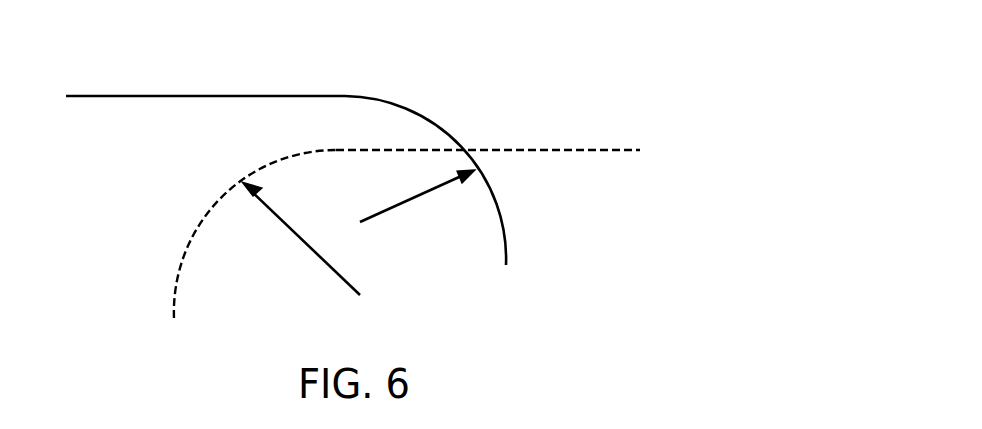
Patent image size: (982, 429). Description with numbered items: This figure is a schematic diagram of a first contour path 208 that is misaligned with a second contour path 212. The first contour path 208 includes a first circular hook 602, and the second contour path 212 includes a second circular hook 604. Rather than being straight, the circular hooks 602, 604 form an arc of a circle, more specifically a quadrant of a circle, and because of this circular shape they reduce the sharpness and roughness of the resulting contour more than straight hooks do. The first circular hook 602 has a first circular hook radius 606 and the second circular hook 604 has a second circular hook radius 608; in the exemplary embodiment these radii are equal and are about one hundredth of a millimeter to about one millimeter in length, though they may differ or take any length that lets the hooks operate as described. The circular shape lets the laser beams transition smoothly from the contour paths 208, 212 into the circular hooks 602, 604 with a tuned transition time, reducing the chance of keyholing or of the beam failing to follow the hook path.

The second contour path 212 is at (300, 96).
The second circular hook 604 is at (418, 112).
The first contour path 208 is at (592, 150).
The first circular hook 602 is at (197, 226).
The first circular hook radius 606 is at (313, 258).
The second circular hook radius 608 is at (411, 203).